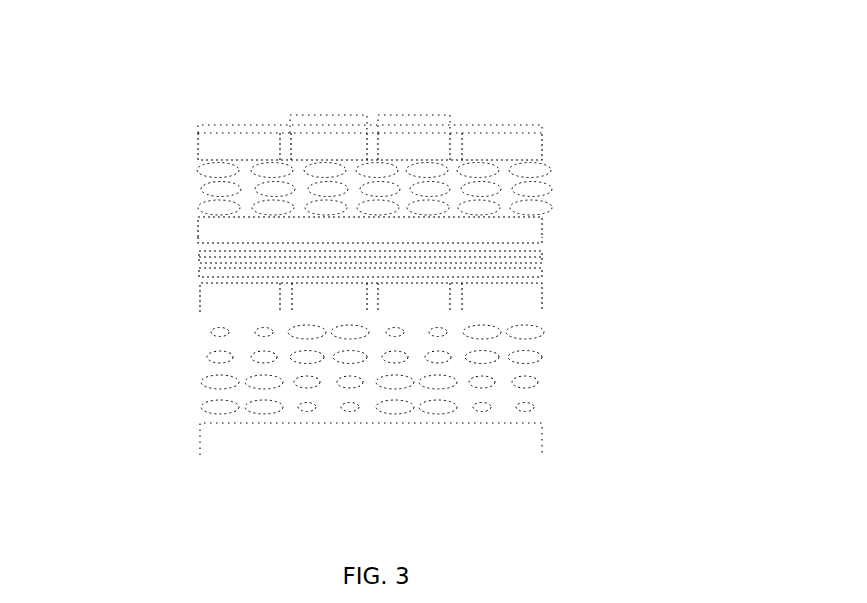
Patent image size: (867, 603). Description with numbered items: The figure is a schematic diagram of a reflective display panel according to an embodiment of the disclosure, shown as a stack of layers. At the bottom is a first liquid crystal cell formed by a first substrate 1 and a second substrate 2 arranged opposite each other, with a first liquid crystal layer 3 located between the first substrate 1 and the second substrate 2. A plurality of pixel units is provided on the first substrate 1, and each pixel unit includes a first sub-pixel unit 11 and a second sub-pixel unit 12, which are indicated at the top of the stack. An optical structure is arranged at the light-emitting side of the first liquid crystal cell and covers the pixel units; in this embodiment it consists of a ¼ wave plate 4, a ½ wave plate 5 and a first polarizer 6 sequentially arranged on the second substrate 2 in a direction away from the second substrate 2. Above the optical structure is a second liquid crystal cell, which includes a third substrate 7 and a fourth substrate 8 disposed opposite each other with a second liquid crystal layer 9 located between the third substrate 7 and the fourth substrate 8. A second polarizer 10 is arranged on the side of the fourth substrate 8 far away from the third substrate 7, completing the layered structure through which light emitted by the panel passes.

The first substrate 1 is at (200, 438).
The second substrate 2 is at (200, 301).
The first liquid crystal layer 3 is at (203, 381).
The ¼ wave plate 4 is at (199, 270).
The ½ wave plate 5 is at (199, 254).
The first polarizer 6 is at (198, 241).
The third substrate 7 is at (548, 223).
The fourth substrate 8 is at (548, 146).
The second liquid crystal layer 9 is at (553, 188).
The second polarizer 10 is at (545, 123).
The first sub-pixel unit 11 is at (313, 113).
The second sub-pixel unit 12 is at (403, 113).